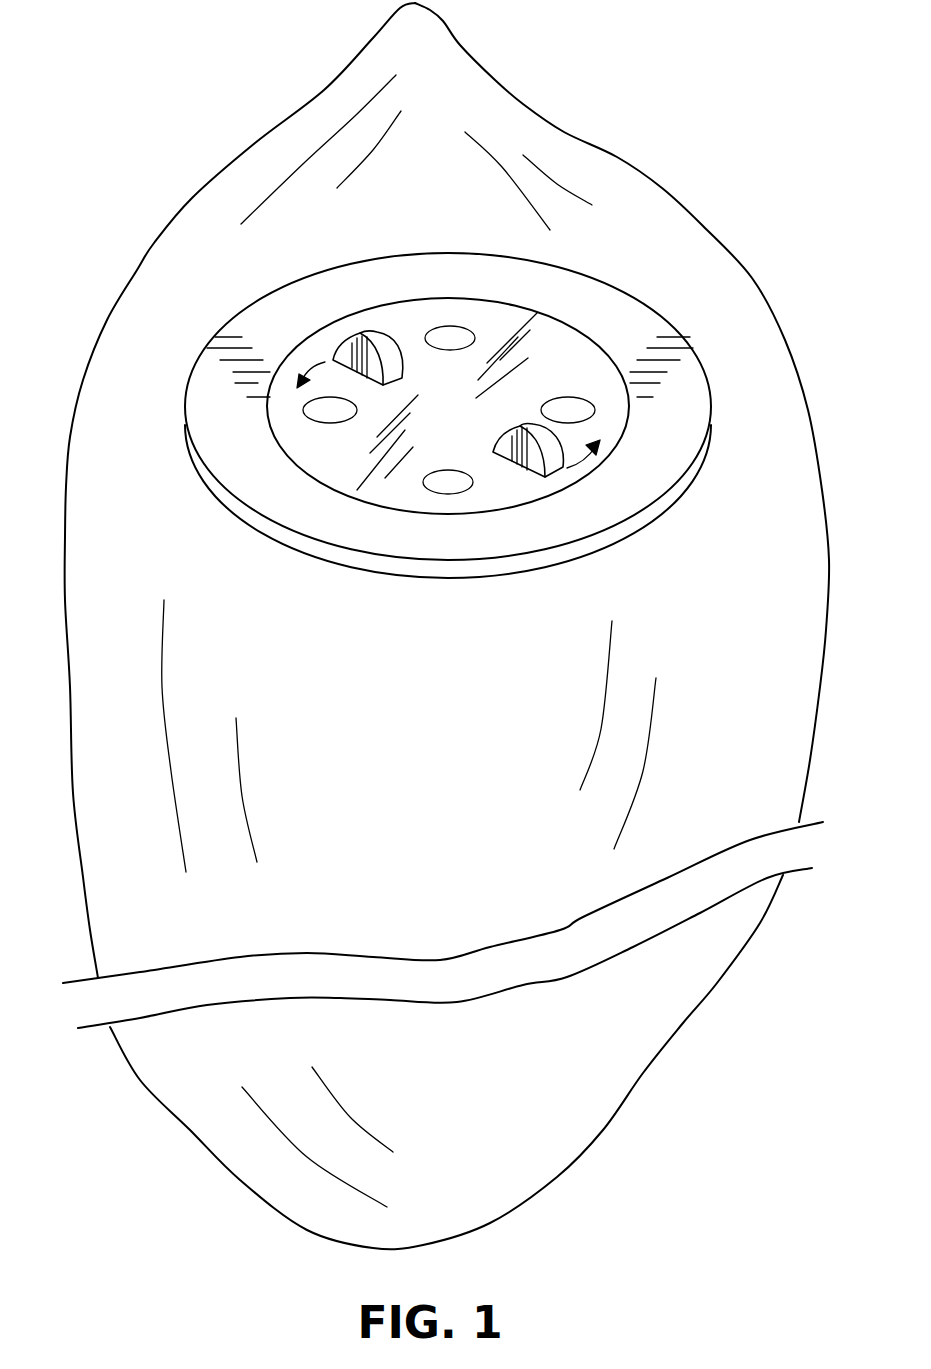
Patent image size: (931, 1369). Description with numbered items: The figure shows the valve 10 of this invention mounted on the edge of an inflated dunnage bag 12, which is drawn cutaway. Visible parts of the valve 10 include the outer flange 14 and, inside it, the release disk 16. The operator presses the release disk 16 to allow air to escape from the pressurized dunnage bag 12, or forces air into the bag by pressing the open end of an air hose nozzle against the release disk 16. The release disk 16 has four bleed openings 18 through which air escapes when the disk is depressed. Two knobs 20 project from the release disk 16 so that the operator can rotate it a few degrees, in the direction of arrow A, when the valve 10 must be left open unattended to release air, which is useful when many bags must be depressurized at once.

The valve 10 is at (246, 283).
The dunnage bag 12 is at (196, 789).
The outer flange 14 is at (620, 505).
The release disk 16 is at (573, 350).
The bleed openings 18 is at (550, 410).
The knobs 20 is at (370, 332).